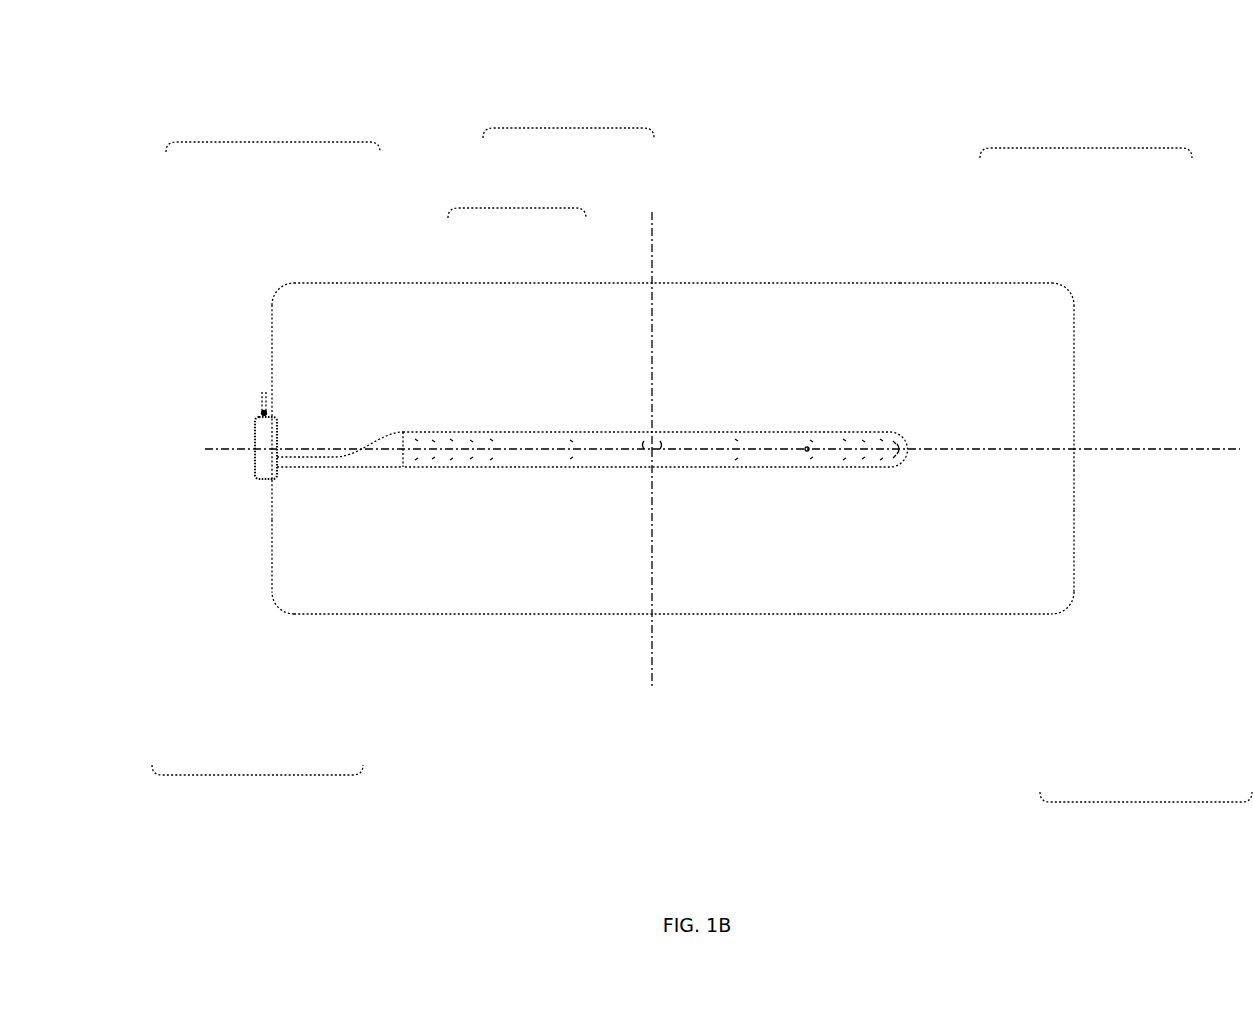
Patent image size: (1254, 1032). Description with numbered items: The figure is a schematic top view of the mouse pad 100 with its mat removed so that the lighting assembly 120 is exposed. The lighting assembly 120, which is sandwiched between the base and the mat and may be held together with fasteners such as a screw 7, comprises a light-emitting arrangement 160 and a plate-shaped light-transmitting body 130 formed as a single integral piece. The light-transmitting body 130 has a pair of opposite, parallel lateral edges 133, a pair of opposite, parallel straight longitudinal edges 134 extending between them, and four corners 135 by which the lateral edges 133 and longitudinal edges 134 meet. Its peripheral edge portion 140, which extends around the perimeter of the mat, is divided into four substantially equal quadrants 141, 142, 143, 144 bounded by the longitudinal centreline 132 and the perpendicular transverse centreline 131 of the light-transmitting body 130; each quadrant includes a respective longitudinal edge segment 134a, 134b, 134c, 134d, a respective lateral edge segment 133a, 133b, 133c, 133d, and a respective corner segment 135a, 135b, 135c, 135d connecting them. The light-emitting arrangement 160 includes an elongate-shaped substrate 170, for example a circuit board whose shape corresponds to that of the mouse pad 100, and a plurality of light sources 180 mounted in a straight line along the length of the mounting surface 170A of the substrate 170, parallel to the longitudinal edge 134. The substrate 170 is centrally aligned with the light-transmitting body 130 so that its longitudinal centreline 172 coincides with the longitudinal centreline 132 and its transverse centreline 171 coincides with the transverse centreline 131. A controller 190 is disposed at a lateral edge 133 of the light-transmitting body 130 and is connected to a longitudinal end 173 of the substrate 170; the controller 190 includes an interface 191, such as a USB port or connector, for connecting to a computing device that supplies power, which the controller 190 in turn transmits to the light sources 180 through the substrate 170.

The mouse pad 100 is at (770, 97).
The lighting assembly 120 is at (568, 128).
The light-transmitting body 130 is at (585, 345).
The transverse centreline 131 is at (652, 668).
The longitudinal centreline 132 is at (985, 452).
The lateral edge 133 is at (270, 502).
The lateral edge segment 133a is at (1078, 378).
The lateral edge segment 133b is at (270, 343).
The lateral edge segment 133c is at (270, 545).
The lateral edge segment 133d is at (1075, 540).
The longitudinal edge 134 is at (840, 283).
The longitudinal edge segment 134a is at (985, 283).
The longitudinal edge segment 134b is at (337, 283).
The longitudinal edge segment 134c is at (340, 614).
The longitudinal edge segment 134d is at (990, 615).
The corner 135 is at (1072, 292).
The corner segment 135a is at (1062, 287).
The corner segment 135b is at (290, 284).
The corner segment 135c is at (288, 613).
The corner segment 135d is at (1065, 612).
The peripheral edge portion 140 is at (735, 615).
The quadrant 141 is at (1085, 148).
The quadrant 142 is at (273, 142).
The quadrant 143 is at (258, 775).
The quadrant 144 is at (1147, 802).
The light-emitting arrangement 160 is at (517, 208).
The elongate-shaped substrate 170 is at (515, 432).
The mounting surface 170A is at (655, 355).
The transverse centreline 171 is at (593, 576).
The longitudinal centreline 172 is at (604, 512).
The longitudinal end 173 is at (278, 455).
The light sources 180 is at (485, 432).
The controller 190 is at (262, 440).
The interface 191 is at (264, 411).
The screw 7 is at (807, 449).